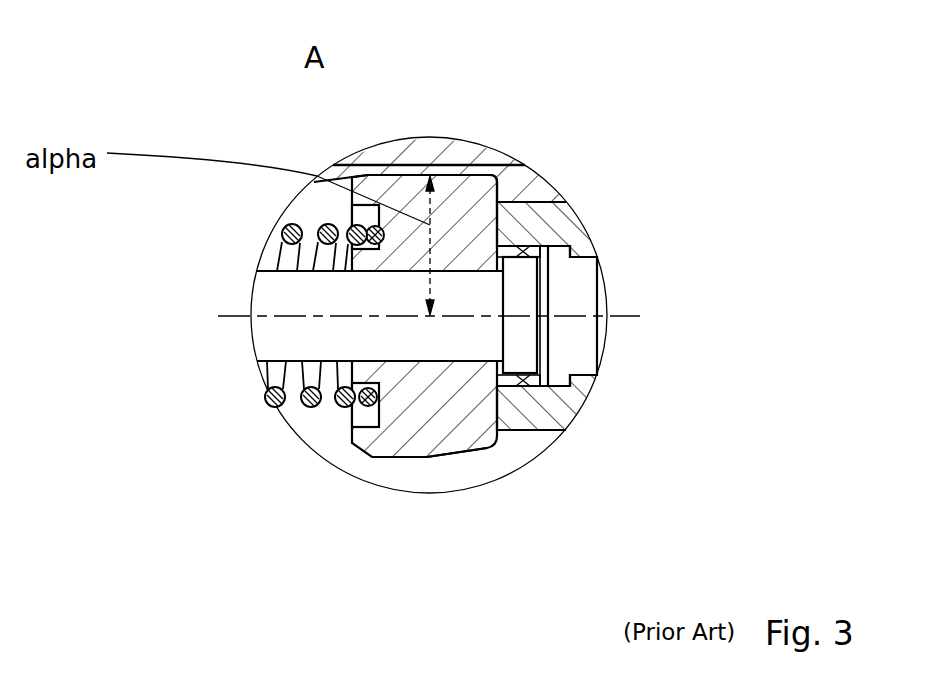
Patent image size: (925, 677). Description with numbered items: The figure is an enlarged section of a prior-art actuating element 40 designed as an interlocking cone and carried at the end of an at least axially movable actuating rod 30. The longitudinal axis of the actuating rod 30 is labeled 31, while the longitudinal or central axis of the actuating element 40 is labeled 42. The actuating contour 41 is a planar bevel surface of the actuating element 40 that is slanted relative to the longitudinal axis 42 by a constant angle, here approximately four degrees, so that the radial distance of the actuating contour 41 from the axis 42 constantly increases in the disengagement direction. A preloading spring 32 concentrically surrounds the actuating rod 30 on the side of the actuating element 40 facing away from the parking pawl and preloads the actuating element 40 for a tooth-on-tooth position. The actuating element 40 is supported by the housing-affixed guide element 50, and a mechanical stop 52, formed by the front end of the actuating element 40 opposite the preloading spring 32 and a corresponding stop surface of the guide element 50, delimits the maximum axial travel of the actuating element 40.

The actuating rod 30 is at (267, 340).
The longitudinal axis of the actuating rod 31 is at (230, 315).
The preloading spring 32 is at (305, 402).
The actuating element 40 is at (468, 430).
The actuating contour 41 is at (431, 456).
The longitudinal axis of the actuating element 42 is at (368, 316).
The housing-affixed guide element 50 is at (413, 150).
The mechanical stop 52 is at (548, 405).